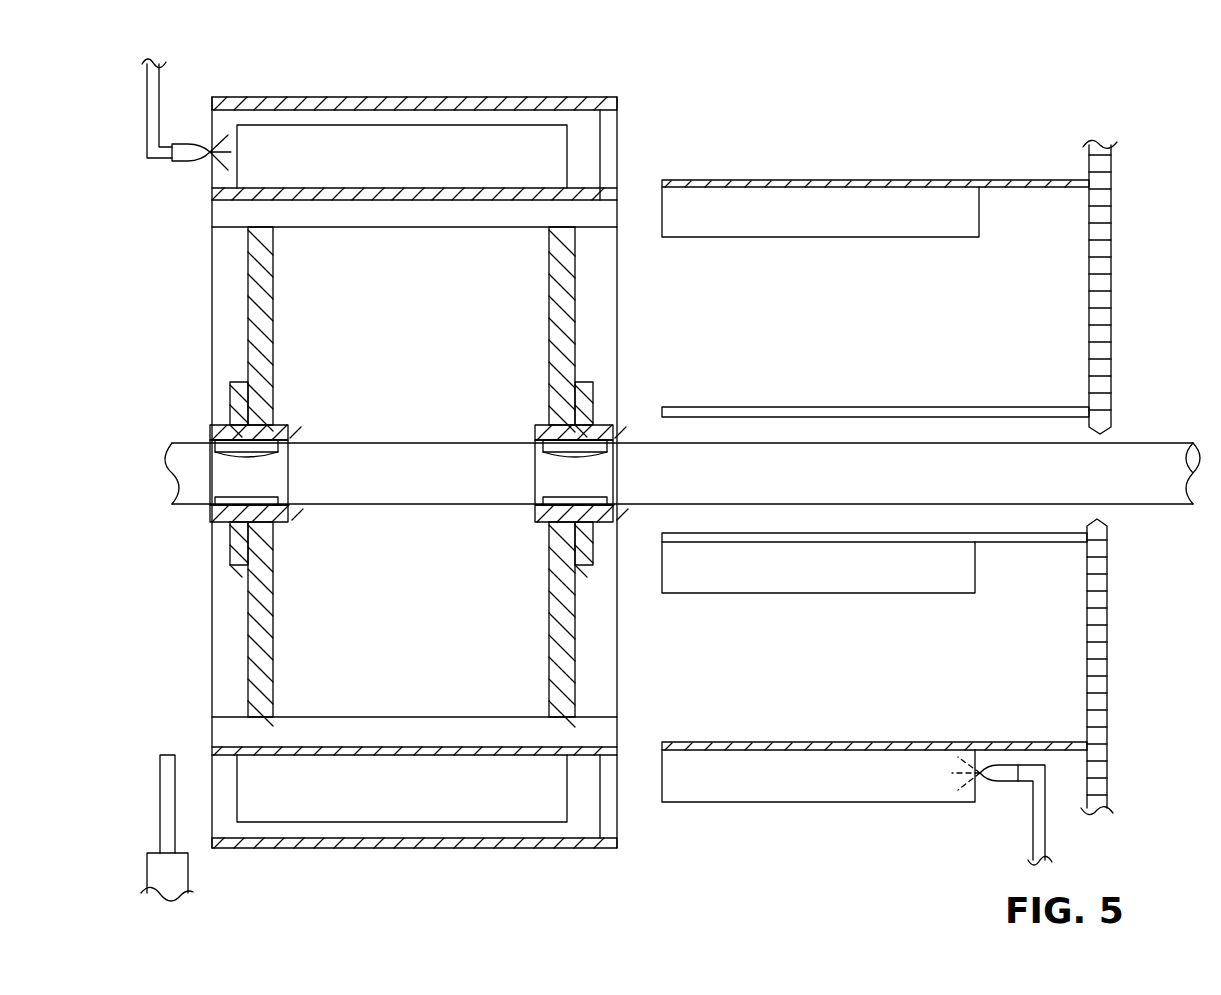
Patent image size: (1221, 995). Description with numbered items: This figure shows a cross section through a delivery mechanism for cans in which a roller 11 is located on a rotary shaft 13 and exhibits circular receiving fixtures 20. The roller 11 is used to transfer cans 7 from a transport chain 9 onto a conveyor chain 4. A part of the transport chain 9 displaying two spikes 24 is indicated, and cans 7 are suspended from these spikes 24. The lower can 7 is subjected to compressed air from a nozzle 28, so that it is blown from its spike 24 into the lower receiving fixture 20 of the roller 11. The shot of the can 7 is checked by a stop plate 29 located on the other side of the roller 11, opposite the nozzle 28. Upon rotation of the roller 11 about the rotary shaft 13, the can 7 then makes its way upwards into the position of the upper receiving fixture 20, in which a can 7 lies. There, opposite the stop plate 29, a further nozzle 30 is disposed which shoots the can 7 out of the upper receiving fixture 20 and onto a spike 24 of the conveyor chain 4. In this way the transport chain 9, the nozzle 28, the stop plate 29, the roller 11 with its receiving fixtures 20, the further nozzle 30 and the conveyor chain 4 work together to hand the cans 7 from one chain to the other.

The conveyor chain 4 is at (1112, 168).
The can 7 is at (502, 128).
The transport chain 9 is at (1104, 736).
The roller 11 is at (556, 98).
The rotary shaft 13 is at (477, 495).
The receiving fixture 20 is at (231, 124).
The spike 24 is at (1066, 180).
The nozzle 28 is at (1036, 814).
The stop plate 29 is at (162, 813).
The further nozzle 30 is at (148, 88).